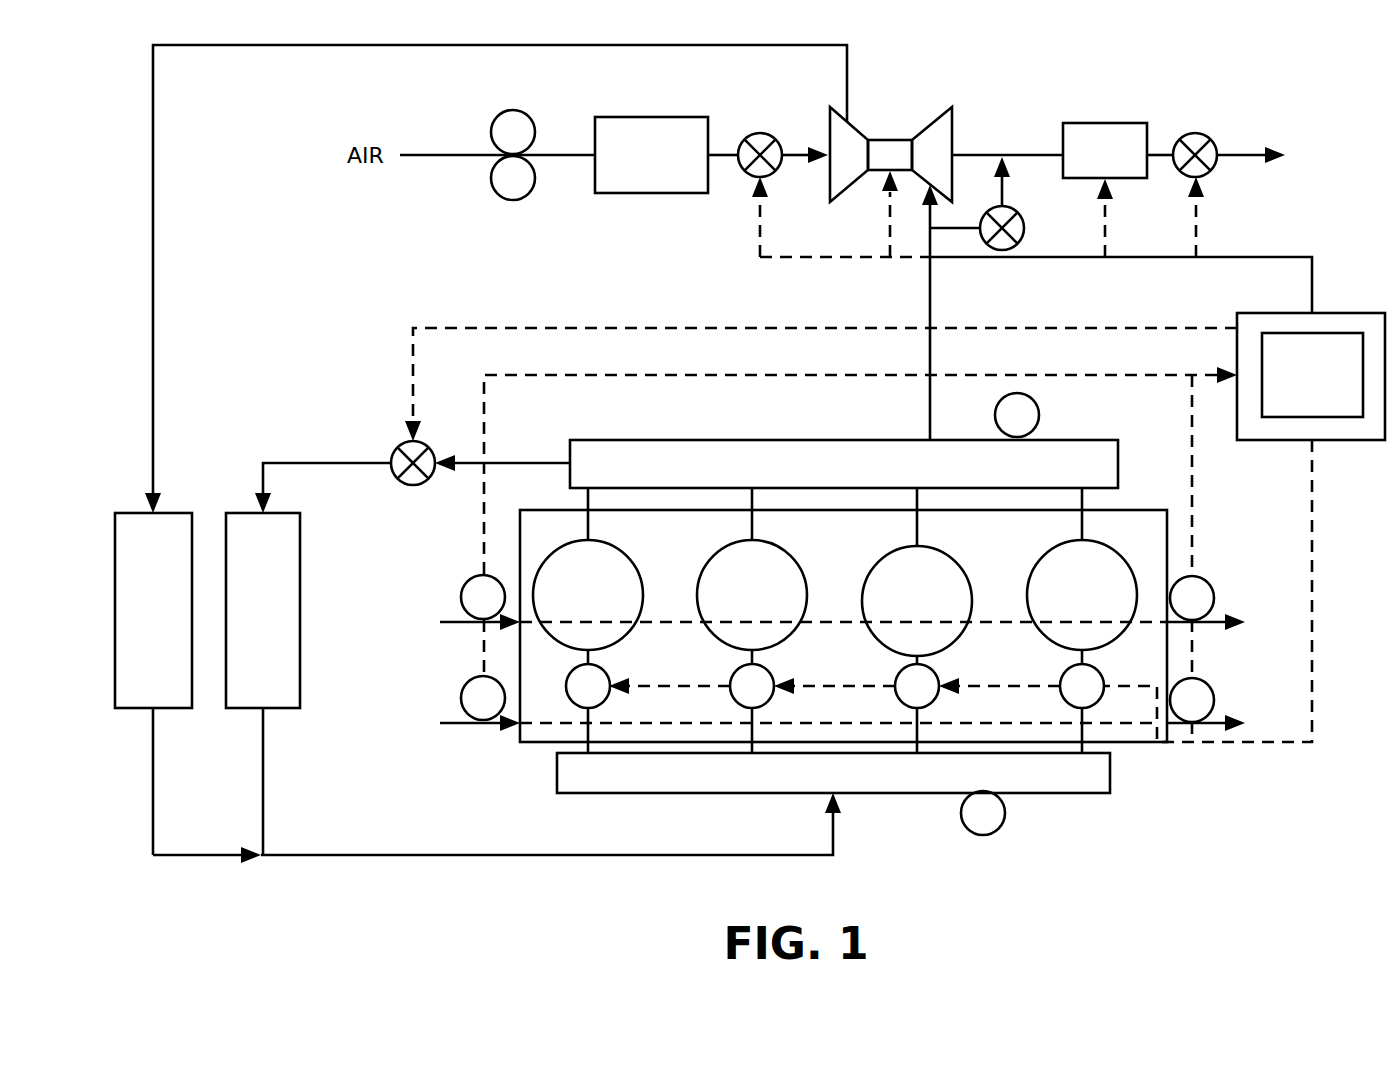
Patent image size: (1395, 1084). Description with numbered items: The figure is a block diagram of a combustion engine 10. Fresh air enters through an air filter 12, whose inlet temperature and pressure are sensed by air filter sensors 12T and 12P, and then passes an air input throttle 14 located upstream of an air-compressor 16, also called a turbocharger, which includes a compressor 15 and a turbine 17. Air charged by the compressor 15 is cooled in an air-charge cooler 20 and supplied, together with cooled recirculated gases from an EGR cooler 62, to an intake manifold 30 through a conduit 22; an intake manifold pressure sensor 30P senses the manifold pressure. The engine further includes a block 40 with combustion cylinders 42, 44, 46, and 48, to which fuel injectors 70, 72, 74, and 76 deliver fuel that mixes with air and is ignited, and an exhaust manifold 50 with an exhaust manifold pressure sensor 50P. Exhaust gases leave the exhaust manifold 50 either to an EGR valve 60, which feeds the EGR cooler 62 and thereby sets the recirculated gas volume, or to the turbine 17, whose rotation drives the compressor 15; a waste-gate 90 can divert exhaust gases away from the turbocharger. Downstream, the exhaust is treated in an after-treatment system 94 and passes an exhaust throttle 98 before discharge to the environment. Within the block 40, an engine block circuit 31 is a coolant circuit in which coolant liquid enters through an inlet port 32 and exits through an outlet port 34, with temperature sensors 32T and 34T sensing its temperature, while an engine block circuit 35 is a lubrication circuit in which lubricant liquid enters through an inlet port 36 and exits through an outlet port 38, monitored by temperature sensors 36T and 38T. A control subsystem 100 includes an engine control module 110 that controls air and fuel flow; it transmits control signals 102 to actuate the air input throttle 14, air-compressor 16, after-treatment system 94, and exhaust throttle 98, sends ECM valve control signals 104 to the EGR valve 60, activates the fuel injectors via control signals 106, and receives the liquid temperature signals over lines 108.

The combustion engine 10 is at (1296, 108).
The air filter 12 is at (640, 194).
The air filter temperature sensor 12T is at (491, 131).
The air filter pressure sensor 12P is at (491, 178).
The air input throttle 14 is at (747, 176).
The compressor 15 is at (826, 120).
The air-compressor 16 is at (890, 138).
The turbine 17 is at (955, 125).
The air-charge cooler 20 is at (181, 512).
The conduit 22 is at (337, 855).
The intake manifold 30 is at (557, 772).
The intake manifold pressure sensor 30P is at (983, 836).
The engine block circuit 31 is at (535, 623).
The inlet port 32 is at (464, 622).
The temperature sensor 32T is at (461, 595).
The outlet port 34 is at (1221, 622).
The temperature sensor 34T is at (1209, 581).
The engine block circuit 35 is at (535, 724).
The inlet port 36 is at (464, 723).
The temperature sensor 36T is at (461, 697).
The outlet port 38 is at (1221, 723).
The temperature sensor 38T is at (1210, 691).
The block 40 is at (540, 510).
The combustion cylinder 42 is at (574, 608).
The combustion cylinder 44 is at (738, 608).
The combustion cylinder 46 is at (903, 614).
The combustion cylinder 48 is at (1068, 608).
The exhaust manifold 50 is at (570, 455).
The exhaust manifold pressure sensor 50P is at (1040, 415).
The EGR valve 60 is at (399, 447).
The EGR cooler 62 is at (238, 512).
The fuel injector 70 is at (576, 698).
The fuel injector 72 is at (740, 698).
The fuel injector 74 is at (905, 698).
The fuel injector 76 is at (1070, 698).
The waste-gate 90 is at (1017, 217).
The after-treatment system 94 is at (1085, 123).
The exhaust throttle 98 is at (1197, 134).
The control subsystem 100 is at (1368, 313).
The control signals 102 is at (1251, 257).
The ECM valve control signals 104 is at (471, 327).
The control signals 106 is at (1314, 642).
The lines 108 is at (860, 513).
The engine control module 110 is at (1293, 401).